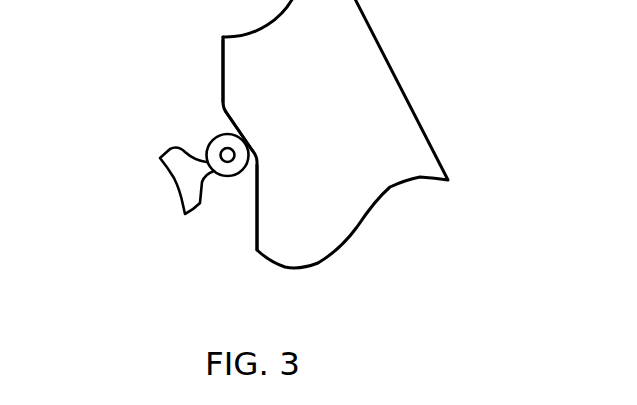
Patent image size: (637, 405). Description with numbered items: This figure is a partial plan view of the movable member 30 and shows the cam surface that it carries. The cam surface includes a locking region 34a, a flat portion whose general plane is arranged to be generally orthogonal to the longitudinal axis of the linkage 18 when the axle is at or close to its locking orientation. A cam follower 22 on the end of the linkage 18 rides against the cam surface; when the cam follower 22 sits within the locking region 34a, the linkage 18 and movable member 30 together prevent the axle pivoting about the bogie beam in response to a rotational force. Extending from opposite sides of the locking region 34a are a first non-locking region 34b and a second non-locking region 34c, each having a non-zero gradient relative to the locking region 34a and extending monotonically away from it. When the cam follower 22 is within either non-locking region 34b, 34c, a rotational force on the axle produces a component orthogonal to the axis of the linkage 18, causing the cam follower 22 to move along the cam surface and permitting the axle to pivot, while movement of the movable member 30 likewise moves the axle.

The movable member 30 is at (443, 32).
The locking region 34a is at (227, 113).
The first non-locking region 34b is at (223, 73).
The second non-locking region 34c is at (257, 223).
The linkage 18 is at (165, 188).
The cam follower 22 is at (231, 176).